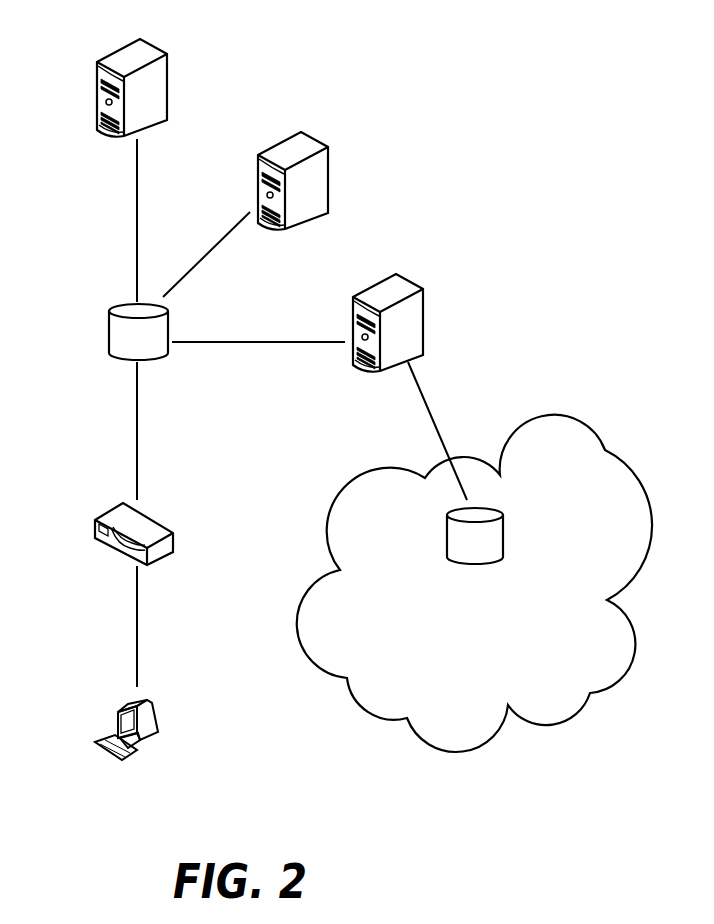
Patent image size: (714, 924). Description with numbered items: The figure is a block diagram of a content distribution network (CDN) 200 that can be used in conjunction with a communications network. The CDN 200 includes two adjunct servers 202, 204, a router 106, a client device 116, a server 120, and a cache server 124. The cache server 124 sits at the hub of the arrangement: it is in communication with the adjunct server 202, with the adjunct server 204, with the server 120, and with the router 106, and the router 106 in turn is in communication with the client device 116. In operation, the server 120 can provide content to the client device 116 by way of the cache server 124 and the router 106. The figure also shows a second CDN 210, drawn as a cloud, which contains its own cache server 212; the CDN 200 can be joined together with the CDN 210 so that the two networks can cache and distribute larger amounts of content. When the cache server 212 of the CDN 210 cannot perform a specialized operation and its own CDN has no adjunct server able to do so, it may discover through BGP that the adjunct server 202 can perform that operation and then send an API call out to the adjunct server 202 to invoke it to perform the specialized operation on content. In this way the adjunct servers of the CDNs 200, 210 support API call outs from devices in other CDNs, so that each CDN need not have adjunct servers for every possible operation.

The content distribution network 200 is at (540, 100).
The server 120 is at (115, 67).
The adjunct server 204 is at (327, 148).
The adjunct server 202 is at (421, 289).
The cache server 124 is at (170, 332).
The router 106 is at (95, 523).
The client device 116 is at (120, 702).
The CDN 210 is at (475, 752).
The cache server 212 is at (505, 537).